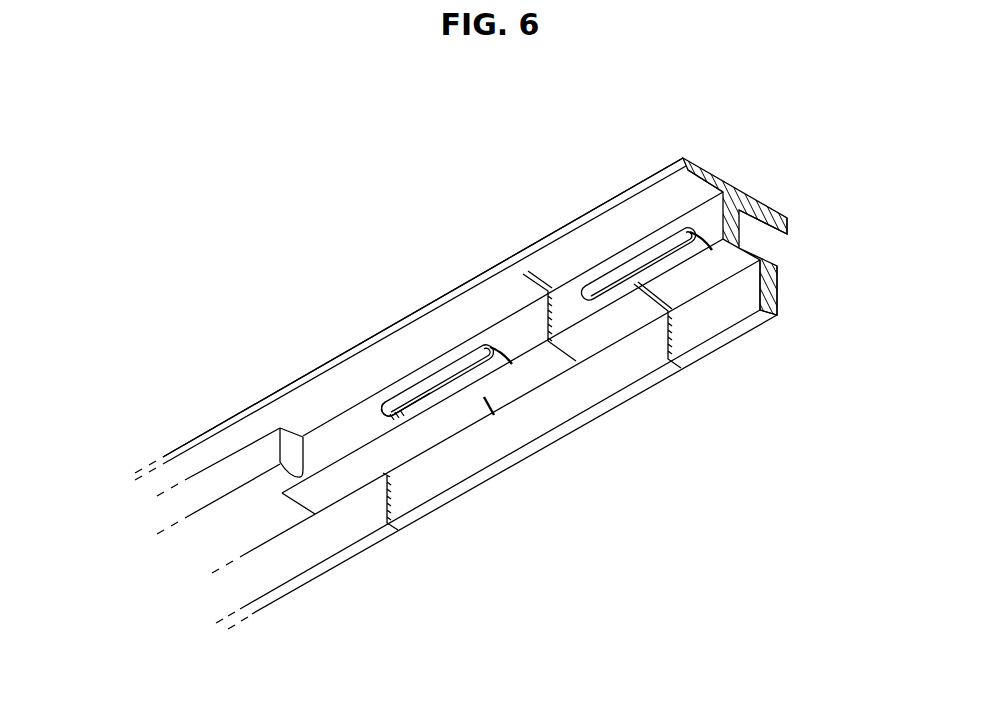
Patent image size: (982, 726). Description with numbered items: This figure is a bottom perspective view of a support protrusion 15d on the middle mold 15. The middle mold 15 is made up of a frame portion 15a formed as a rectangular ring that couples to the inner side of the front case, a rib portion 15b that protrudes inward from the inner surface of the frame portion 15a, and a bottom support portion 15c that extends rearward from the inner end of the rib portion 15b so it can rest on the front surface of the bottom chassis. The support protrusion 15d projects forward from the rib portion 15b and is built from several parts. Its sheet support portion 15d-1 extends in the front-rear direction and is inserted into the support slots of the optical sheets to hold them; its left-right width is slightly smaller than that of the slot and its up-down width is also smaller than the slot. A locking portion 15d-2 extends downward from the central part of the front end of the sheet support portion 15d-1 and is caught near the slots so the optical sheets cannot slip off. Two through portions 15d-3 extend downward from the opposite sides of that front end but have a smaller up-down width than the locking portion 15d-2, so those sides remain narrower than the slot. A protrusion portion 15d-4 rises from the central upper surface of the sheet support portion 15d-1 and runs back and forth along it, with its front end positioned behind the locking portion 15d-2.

The middle mold 15 is at (290, 382).
The frame portion 15a is at (722, 166).
The rib portion 15b is at (745, 204).
The bottom support portion 15c is at (778, 285).
The support protrusion 15d is at (396, 366).
The sheet support portion 15d-1 is at (489, 366).
The locking portion 15d-2 is at (440, 403).
The through portions 15d-3 is at (495, 365).
The protrusion portion 15d-4 is at (431, 431).